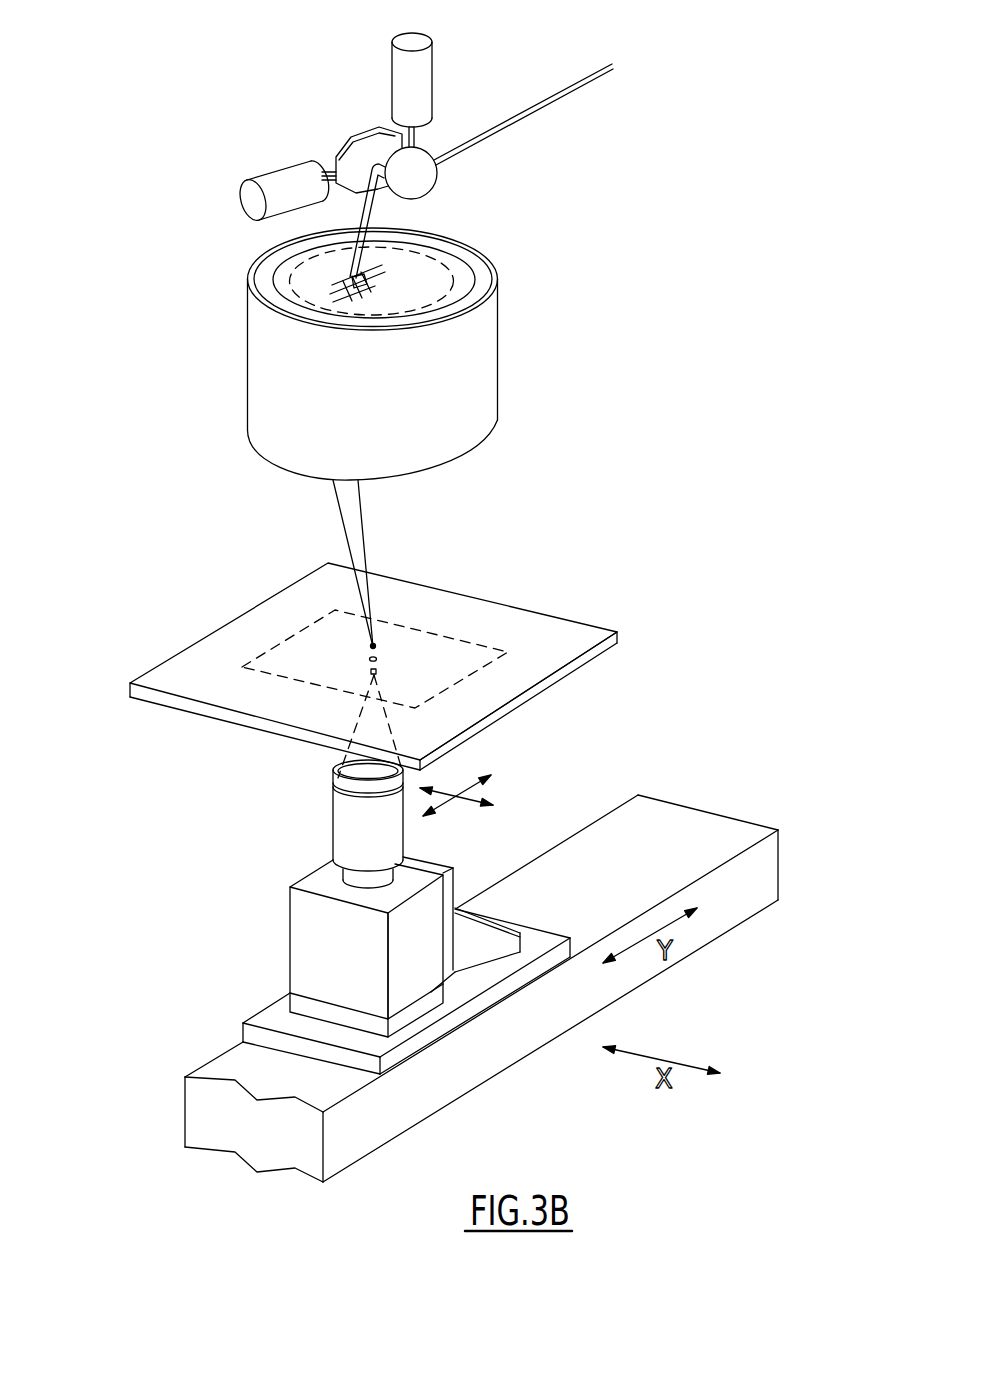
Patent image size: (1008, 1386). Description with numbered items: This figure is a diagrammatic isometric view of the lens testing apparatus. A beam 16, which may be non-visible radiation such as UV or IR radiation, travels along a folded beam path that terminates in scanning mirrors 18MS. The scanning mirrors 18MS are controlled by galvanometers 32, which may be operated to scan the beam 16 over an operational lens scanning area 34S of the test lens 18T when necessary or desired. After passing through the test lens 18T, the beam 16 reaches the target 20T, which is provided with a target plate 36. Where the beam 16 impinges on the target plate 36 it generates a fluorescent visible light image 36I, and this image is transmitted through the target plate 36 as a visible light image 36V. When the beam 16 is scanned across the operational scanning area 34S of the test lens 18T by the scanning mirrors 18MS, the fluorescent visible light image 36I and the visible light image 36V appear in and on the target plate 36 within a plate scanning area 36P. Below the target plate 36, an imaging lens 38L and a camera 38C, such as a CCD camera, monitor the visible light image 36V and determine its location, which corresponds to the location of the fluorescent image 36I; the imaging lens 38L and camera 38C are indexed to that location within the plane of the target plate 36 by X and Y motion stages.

The Beam 16 is at (571, 92).
The Scanning Mirrors 18MS is at (374, 128).
The Test Lens 18T is at (247, 346).
The Target 20T is at (617, 632).
The Galvanometers 32 is at (433, 73).
The Operational Lens Scanning Area 34S is at (431, 244).
The Target Plate 36 is at (550, 684).
The Fluorescent Visible Light Image 36I is at (393, 660).
The Plate Scanning Area 36P is at (473, 642).
The Visible Light Image 36V is at (372, 671).
The Camera 38C is at (291, 912).
The Imaging Lens 38L is at (333, 803).